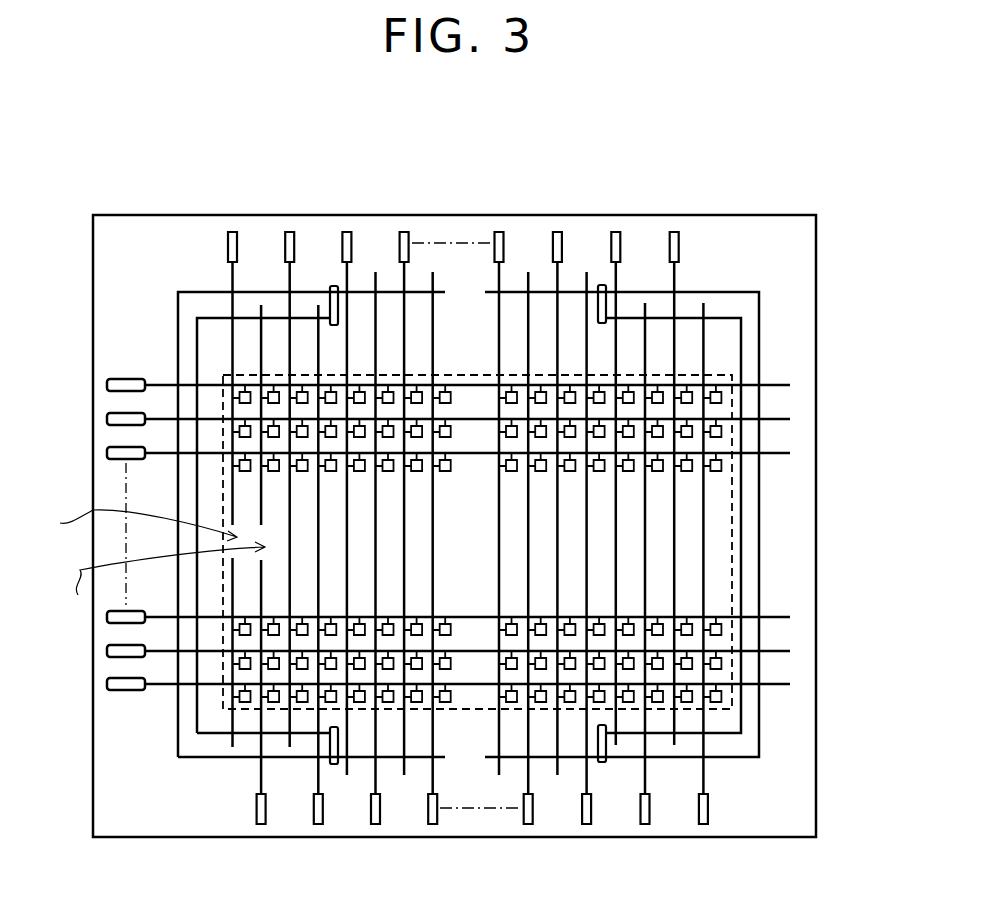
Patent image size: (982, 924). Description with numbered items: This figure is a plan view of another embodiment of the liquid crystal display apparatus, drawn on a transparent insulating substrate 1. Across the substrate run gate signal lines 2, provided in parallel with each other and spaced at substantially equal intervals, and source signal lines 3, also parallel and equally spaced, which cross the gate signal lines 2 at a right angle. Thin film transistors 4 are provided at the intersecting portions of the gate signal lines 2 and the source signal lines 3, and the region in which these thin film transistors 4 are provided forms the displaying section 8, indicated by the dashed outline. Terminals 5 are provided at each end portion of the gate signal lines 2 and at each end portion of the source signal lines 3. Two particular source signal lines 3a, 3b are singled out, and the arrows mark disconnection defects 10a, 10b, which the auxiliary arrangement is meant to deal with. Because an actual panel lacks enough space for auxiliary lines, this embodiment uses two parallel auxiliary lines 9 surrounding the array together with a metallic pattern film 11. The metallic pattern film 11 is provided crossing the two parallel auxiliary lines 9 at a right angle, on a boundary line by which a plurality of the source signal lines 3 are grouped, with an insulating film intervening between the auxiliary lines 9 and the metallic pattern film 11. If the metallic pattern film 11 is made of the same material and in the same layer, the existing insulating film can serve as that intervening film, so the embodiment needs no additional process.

The transparent insulating substrate 1 is at (792, 295).
The gate signal lines 2 is at (775, 678).
The source signal lines 3 is at (677, 276).
The source signal line 3a is at (231, 281).
The source signal line 3b is at (261, 773).
The thin film transistors 4 is at (721, 393).
The terminals 5 is at (233, 232).
The displaying section 8 is at (732, 575).
The auxiliary line 9 is at (742, 532).
The disconnection defect 10a is at (132, 514).
The disconnection defect 10b is at (146, 584).
The metallic pattern film 11 is at (333, 287).